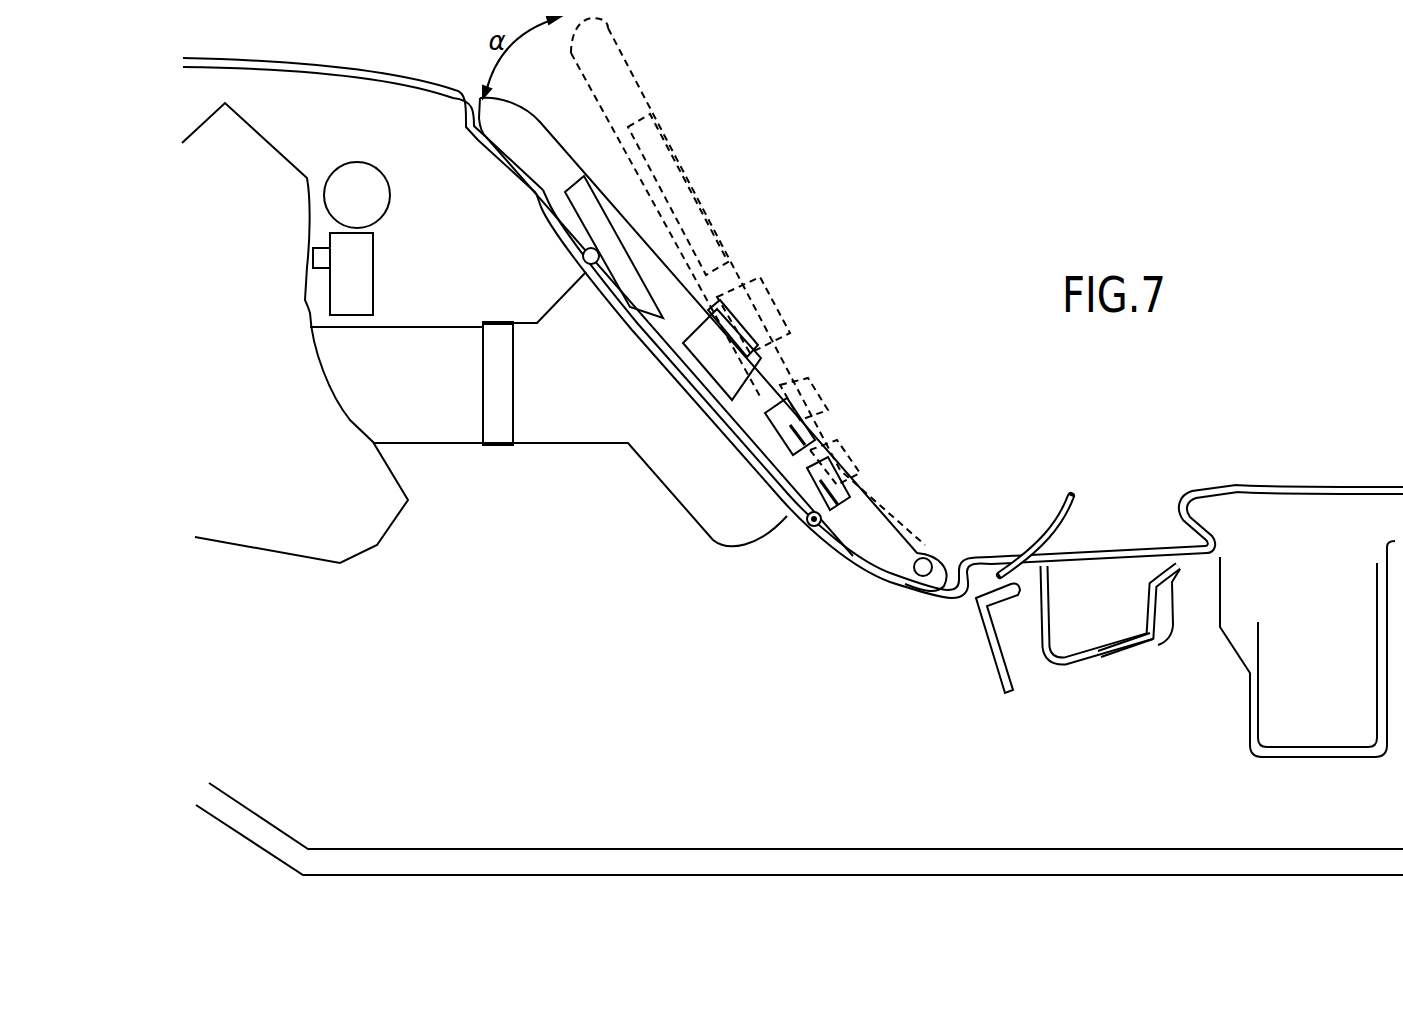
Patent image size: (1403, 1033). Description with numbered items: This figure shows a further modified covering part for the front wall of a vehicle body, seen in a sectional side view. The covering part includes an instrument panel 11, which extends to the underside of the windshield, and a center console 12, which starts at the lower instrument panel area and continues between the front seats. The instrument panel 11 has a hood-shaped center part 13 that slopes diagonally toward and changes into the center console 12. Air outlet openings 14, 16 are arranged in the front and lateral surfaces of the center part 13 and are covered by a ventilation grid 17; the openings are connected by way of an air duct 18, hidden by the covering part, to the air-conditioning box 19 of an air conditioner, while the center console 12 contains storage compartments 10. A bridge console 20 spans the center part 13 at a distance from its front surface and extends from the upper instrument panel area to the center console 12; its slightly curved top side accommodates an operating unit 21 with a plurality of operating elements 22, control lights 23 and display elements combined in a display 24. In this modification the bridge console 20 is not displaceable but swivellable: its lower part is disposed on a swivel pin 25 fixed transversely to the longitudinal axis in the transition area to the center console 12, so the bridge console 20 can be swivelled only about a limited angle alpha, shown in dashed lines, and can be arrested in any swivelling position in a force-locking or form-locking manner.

The storage compartments 10 is at (1313, 553).
The instrument panel 11 is at (377, 66).
The center console 12 is at (1120, 552).
The center part 13 is at (549, 228).
The air outlet opening 14 is at (668, 369).
The air outlet opening 16 is at (700, 498).
The ventilation grid 17 is at (665, 281).
The air duct 18 is at (443, 408).
The air-conditioning box 19 is at (259, 527).
The bridge console 20 is at (553, 162).
The operating unit 21 is at (706, 296).
The operating elements 22 is at (850, 490).
The control lights 23 is at (727, 367).
The display 24 is at (609, 224).
The swivel pin 25 is at (916, 572).